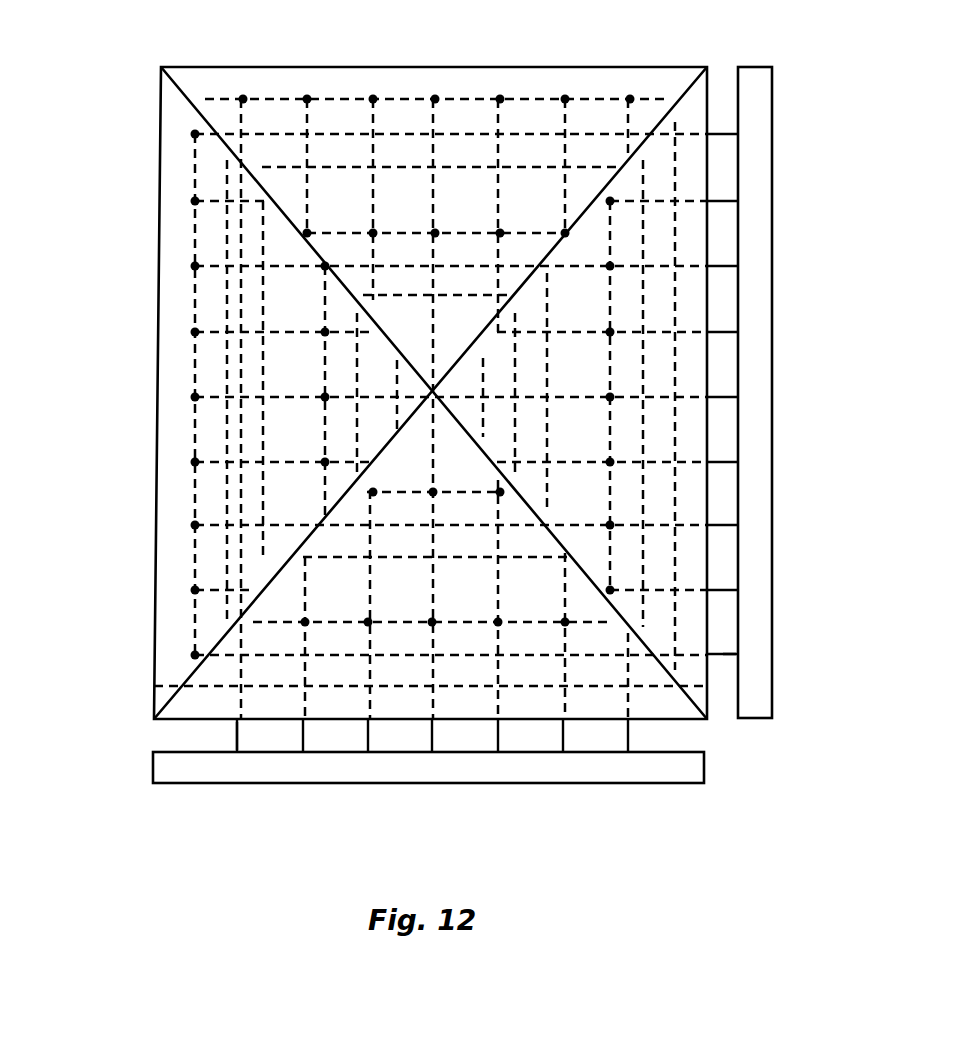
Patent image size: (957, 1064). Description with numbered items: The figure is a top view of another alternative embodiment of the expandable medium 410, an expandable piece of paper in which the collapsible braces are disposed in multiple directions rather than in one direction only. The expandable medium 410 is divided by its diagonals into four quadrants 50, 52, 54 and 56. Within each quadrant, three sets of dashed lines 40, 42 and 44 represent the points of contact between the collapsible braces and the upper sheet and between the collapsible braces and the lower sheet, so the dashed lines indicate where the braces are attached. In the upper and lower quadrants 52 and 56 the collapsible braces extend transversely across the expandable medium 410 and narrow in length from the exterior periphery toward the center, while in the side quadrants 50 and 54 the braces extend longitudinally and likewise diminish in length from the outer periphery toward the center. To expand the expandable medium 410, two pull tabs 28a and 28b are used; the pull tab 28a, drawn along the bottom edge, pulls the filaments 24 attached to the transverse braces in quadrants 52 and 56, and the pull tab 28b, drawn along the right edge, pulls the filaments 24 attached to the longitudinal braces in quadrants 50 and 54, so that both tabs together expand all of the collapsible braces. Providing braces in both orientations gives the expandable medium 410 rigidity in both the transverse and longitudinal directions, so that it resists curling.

The expandable medium 410 is at (108, 58).
The first set of dashed lines 40 is at (222, 98).
The second set of dashed lines 42 is at (270, 133).
The third set of dashed lines 44 is at (292, 167).
The quadrant 50 is at (173, 428).
The quadrant 52 is at (472, 90).
The quadrant 54 is at (688, 367).
The quadrant 56 is at (466, 705).
The filaments 24 is at (235, 732).
The pull tab 28a is at (252, 768).
The pull tab 28b is at (760, 582).